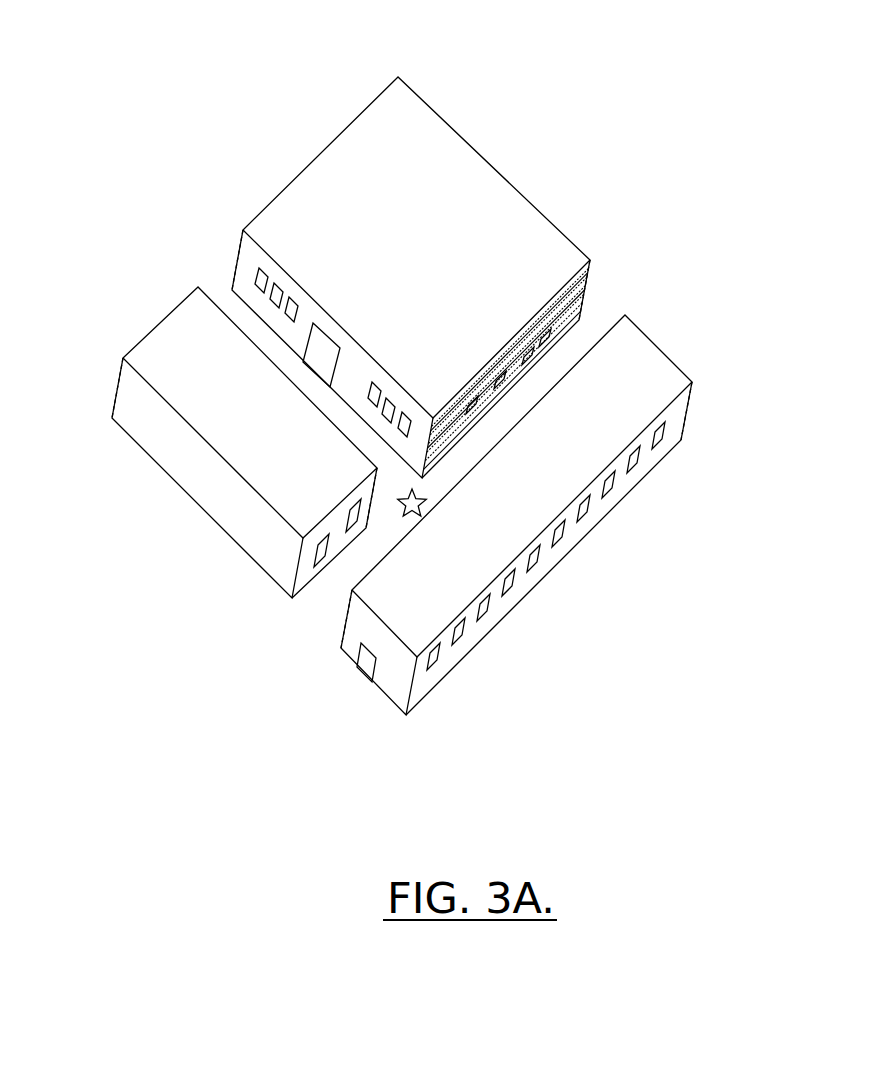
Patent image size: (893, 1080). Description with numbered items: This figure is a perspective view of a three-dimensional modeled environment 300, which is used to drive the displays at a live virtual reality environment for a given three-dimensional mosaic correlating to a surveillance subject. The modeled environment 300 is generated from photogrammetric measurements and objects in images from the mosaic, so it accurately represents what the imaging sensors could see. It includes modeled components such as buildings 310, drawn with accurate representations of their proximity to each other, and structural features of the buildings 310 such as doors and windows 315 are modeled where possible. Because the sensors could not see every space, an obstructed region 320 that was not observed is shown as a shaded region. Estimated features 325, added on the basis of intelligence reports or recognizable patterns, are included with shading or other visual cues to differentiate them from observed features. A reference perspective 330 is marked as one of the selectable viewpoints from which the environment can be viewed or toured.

The 3D modeled environment 300 is at (186, 82).
The buildings 310 is at (360, 113).
The doors and windows 315 is at (262, 280).
The obstructed region 320 is at (578, 304).
The estimated features 325 is at (543, 343).
The reference perspective 330 is at (414, 511).